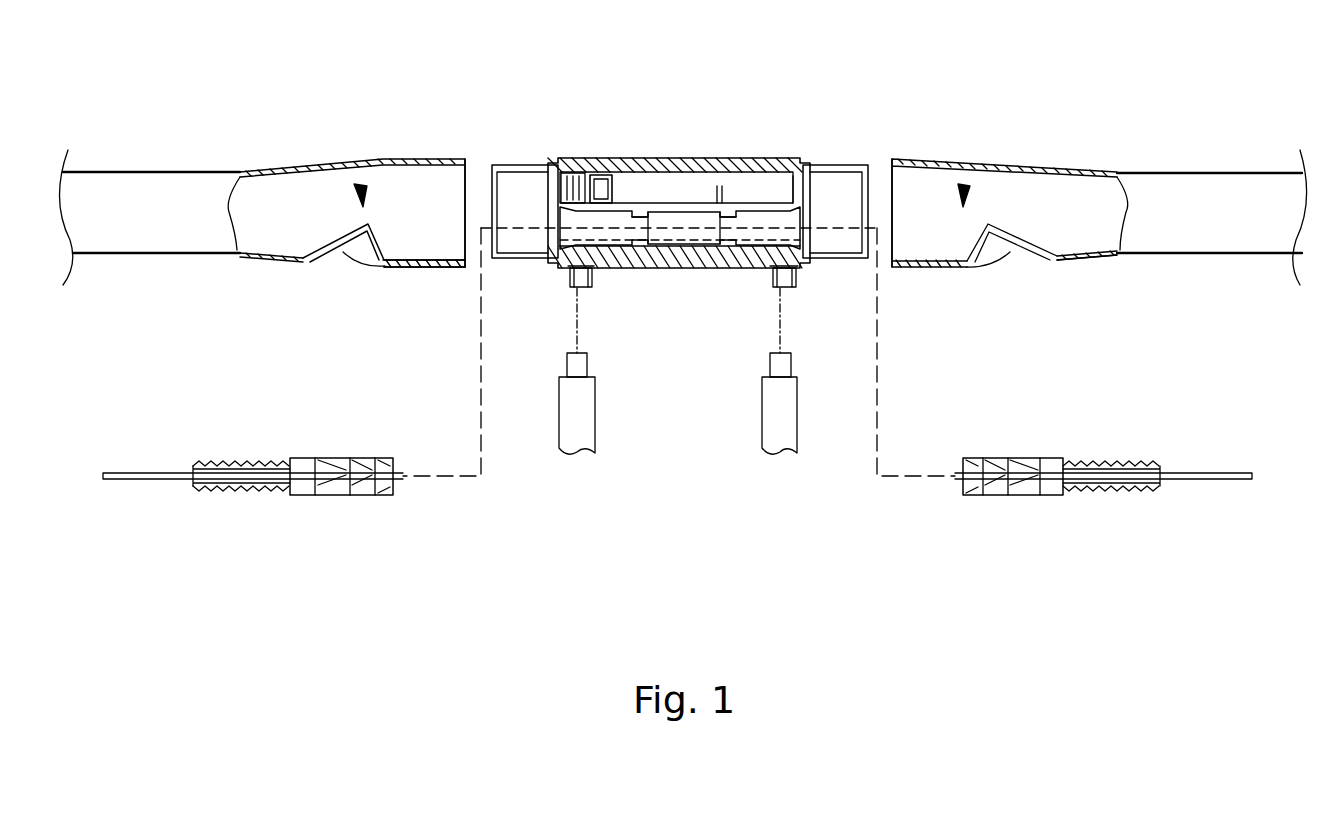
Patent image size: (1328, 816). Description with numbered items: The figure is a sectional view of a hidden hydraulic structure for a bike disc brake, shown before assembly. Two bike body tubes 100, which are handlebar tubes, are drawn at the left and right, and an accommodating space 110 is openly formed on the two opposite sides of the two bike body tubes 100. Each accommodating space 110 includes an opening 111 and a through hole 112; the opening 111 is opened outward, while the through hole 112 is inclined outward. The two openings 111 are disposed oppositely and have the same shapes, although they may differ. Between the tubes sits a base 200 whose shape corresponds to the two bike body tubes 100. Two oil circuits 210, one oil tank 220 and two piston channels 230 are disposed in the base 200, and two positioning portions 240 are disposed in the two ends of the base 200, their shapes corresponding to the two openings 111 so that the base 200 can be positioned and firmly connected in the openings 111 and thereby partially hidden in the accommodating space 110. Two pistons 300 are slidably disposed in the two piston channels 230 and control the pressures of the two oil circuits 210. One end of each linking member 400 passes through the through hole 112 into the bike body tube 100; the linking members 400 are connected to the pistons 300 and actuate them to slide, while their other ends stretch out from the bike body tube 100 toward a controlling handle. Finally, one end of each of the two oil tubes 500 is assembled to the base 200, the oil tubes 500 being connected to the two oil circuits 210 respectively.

The bike body tube 100 is at (147, 170).
The accommodating space 110 is at (358, 184).
The opening 111 is at (462, 217).
The through hole 112 is at (343, 258).
The base 200 is at (563, 160).
The oil circuit 210 is at (625, 252).
The oil tank 220 is at (666, 188).
The piston channel 230 is at (610, 172).
The positioning portion 240 is at (518, 276).
The piston 300 is at (325, 497).
The linking member 400 is at (137, 483).
The oil tube 500 is at (565, 423).